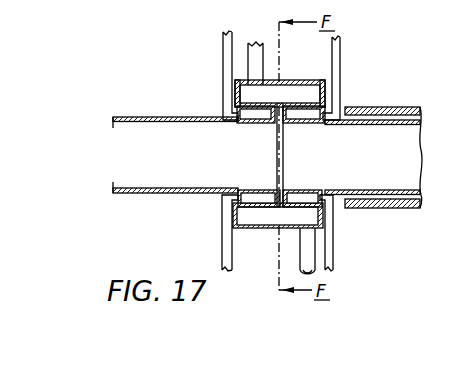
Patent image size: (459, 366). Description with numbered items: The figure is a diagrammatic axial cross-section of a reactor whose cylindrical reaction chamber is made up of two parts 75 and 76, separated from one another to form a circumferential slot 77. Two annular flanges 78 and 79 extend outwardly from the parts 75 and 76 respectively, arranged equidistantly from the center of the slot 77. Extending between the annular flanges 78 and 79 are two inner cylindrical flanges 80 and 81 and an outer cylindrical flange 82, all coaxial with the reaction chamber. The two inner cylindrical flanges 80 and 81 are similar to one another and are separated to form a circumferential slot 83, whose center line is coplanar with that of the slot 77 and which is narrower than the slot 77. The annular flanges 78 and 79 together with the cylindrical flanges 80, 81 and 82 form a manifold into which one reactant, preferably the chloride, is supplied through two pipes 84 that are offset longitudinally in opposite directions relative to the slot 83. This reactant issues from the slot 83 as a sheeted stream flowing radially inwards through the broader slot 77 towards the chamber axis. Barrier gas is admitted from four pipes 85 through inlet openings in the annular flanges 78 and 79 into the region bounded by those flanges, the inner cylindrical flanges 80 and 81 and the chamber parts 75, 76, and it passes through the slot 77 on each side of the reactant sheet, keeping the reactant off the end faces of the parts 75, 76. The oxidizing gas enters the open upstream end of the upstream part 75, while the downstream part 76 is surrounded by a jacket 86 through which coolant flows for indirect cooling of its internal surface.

The upstream part of the reaction chamber 75 is at (146, 117).
The downstream part of the reaction chamber 76 is at (381, 125).
The circumferential slot 77 is at (285, 127).
The annular flange 78 is at (236, 97).
The annular flange 79 is at (325, 92).
The inner cylindrical flange 80 is at (263, 112).
The inner cylindrical flange 81 is at (306, 198).
The outer cylindrical flange 82 is at (293, 82).
The circumferential slot 83 is at (283, 162).
The pipe 84 is at (253, 63).
The barrier gas pipe 85 is at (223, 50).
The jacket 86 is at (379, 107).